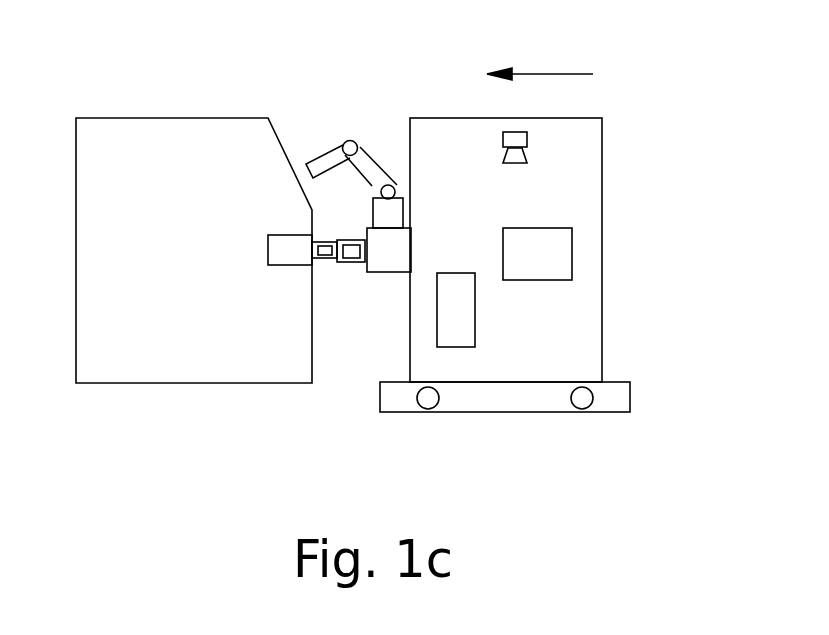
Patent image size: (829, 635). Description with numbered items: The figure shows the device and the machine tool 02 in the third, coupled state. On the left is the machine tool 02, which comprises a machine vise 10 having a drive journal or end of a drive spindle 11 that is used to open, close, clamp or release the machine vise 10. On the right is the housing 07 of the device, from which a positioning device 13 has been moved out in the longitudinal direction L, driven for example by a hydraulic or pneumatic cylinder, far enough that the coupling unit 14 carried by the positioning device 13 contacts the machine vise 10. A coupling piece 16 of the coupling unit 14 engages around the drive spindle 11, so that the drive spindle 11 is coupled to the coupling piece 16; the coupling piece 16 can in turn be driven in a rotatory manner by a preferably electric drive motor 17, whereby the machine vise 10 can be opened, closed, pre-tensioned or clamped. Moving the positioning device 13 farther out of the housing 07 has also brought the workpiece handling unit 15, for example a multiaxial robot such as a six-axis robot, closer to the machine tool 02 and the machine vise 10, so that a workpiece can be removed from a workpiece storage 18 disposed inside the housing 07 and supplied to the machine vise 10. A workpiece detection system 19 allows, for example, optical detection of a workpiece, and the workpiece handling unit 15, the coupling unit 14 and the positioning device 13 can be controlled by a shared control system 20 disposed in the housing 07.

The machine tool 02 is at (121, 192).
The housing 07 is at (570, 147).
The machine vise 10 is at (280, 267).
The drive spindle 11 is at (320, 252).
The positioning device 13 is at (400, 250).
The coupling unit 14 is at (350, 262).
The workpiece handling unit 15 is at (380, 213).
The coupling piece 16 is at (325, 262).
The drive motor 17 is at (337, 238).
The workpiece storage 18 is at (542, 257).
The workpiece detection system 19 is at (517, 140).
The control system 20 is at (460, 317).
The longitudinal direction L is at (550, 72).